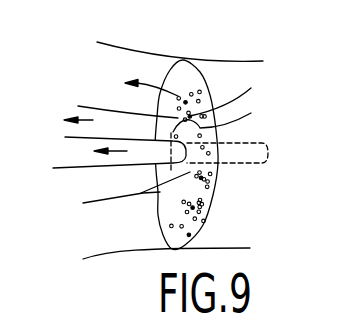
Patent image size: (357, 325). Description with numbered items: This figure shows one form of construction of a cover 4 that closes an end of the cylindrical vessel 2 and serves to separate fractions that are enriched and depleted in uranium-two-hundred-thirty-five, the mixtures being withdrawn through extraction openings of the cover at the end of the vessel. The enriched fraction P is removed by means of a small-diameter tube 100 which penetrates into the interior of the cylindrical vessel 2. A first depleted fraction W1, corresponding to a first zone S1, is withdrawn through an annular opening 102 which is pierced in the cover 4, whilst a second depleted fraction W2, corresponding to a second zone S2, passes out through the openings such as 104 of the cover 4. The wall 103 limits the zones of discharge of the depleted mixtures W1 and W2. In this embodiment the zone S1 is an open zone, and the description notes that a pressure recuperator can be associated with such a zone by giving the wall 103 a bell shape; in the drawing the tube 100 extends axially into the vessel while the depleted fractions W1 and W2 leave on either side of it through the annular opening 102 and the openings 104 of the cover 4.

The cylindrical vessel 2 is at (250, 248).
The cover 4 is at (190, 62).
The small-diameter tube 100 is at (115, 168).
The annular opening 102 is at (145, 193).
The wall 103 is at (104, 198).
The openings of the cover 104 is at (197, 97).
The first depleted fraction W1 is at (121, 123).
The second depleted fraction W2 is at (131, 74).
The enriched fraction P is at (97, 149).
The first zone S1 is at (228, 114).
The second zone S2 is at (236, 92).